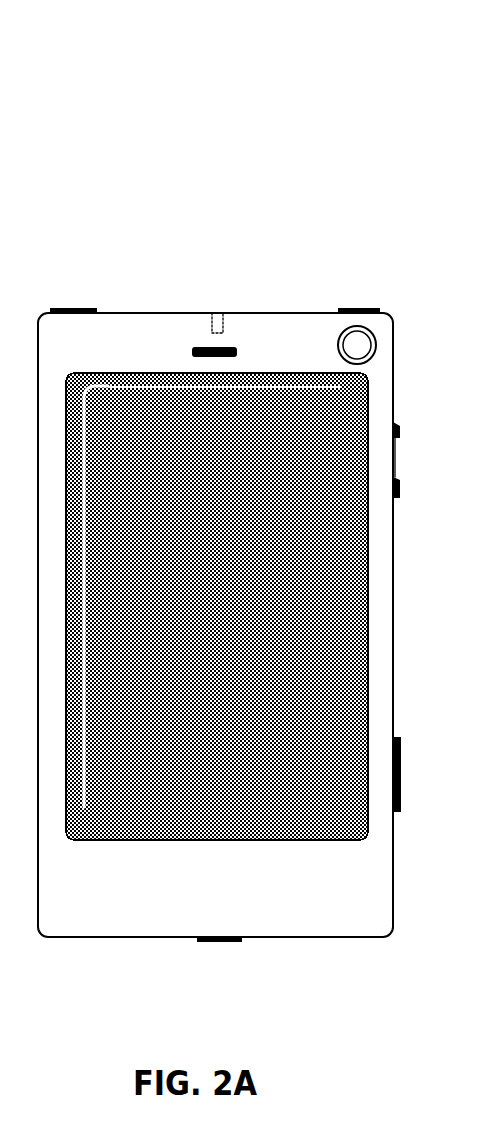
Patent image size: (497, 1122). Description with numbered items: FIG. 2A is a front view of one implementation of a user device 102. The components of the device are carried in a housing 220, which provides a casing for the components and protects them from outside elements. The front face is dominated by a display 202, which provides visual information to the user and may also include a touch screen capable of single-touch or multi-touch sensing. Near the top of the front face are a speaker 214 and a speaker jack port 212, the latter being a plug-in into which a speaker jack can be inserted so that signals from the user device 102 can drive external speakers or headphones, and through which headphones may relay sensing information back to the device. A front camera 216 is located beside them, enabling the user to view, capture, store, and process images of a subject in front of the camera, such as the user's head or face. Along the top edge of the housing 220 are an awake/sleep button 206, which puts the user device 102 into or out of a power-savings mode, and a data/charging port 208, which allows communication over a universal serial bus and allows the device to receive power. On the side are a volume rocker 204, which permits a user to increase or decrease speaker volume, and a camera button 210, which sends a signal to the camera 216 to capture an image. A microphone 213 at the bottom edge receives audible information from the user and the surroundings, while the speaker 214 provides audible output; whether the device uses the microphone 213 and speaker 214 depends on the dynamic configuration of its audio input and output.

The user device 102 is at (207, 98).
The display 202 is at (368, 653).
The volume rocker 204 is at (496, 430).
The awake/sleep button 206 is at (72, 307).
The data/charging port 208 is at (496, 288).
The camera button 210 is at (496, 765).
The speaker jack port 212 is at (213, 313).
The microphone 213 is at (210, 943).
The speaker 214 is at (193, 348).
The camera 216 is at (358, 345).
The housing 220 is at (355, 938).